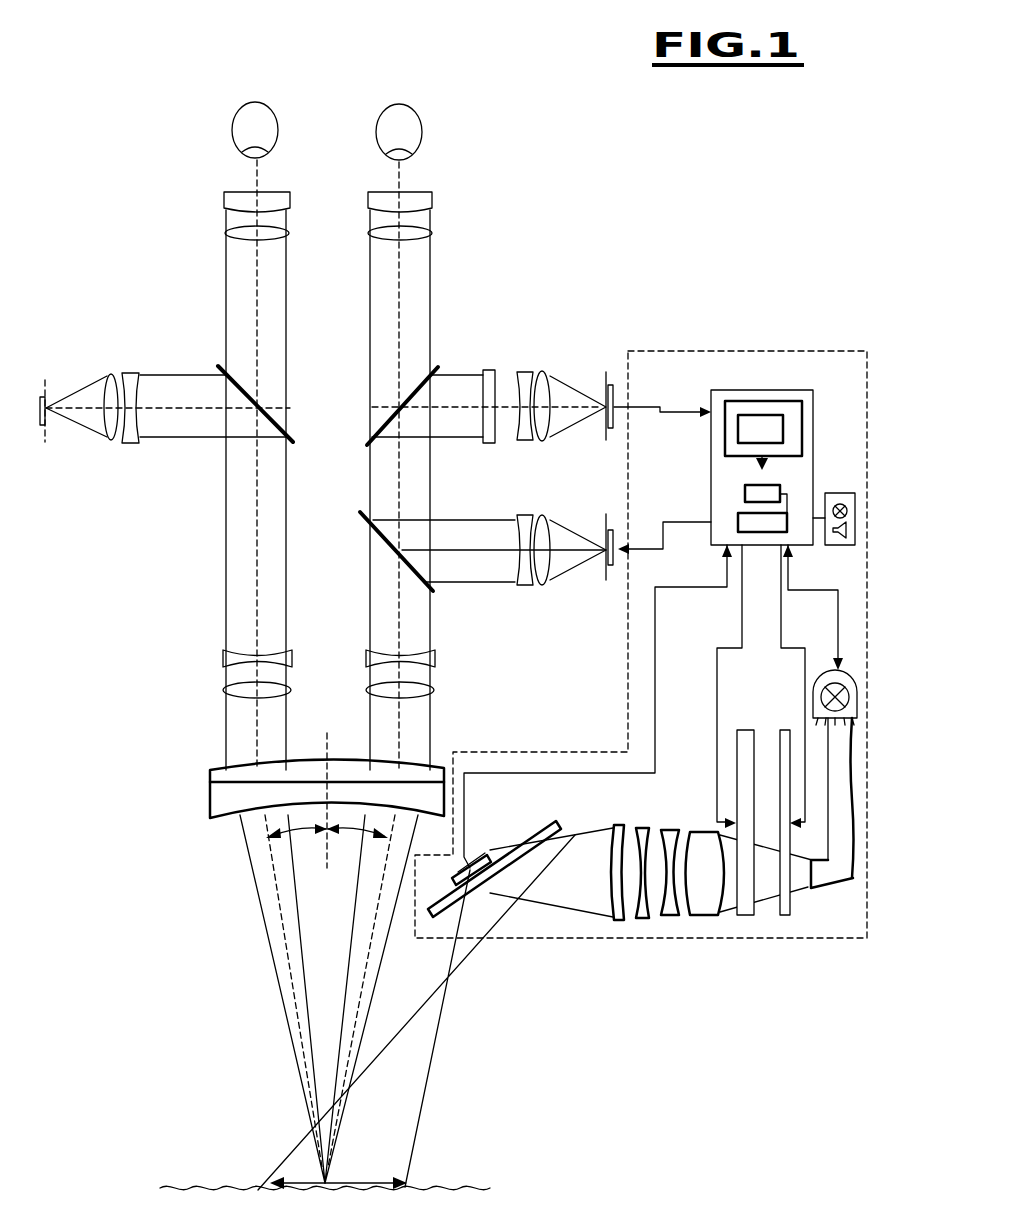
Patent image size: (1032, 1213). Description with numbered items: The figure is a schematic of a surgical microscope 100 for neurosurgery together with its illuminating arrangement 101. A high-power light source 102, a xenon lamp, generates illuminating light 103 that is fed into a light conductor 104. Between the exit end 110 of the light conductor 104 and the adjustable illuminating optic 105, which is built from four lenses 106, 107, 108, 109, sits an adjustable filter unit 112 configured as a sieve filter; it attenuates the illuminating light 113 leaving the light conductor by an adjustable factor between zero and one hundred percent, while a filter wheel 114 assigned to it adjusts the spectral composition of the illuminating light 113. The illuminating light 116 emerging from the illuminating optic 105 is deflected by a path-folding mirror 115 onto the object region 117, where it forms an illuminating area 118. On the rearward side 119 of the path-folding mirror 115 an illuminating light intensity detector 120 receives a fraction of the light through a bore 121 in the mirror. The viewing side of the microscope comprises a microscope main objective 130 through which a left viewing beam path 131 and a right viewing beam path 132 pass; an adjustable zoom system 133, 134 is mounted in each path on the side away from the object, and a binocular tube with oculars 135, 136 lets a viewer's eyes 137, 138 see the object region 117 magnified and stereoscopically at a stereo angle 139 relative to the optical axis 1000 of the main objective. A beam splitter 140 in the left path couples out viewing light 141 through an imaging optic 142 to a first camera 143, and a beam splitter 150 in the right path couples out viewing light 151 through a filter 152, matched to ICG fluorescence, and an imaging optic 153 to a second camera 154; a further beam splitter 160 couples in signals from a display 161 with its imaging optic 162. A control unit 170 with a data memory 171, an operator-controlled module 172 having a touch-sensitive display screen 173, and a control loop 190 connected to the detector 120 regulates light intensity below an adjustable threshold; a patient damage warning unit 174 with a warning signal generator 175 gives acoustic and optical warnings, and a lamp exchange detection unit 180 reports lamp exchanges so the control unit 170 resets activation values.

The surgical microscope 100 is at (140, 258).
The illuminating arrangement 101 is at (655, 363).
The high-power light source 102 is at (858, 690).
The illuminating light 103 is at (855, 722).
The light conductor 104 is at (840, 868).
The adjustable illuminating optic 105 is at (712, 824).
The lens 106 is at (612, 925).
The lens 107 is at (636, 925).
The lens 108 is at (668, 910).
The lens 109 is at (702, 900).
The exit end of the light conductor 110 is at (827, 887).
The adjustable filter unit 112 is at (784, 917).
The illuminating light 113 is at (798, 880).
The filter wheel 114 is at (753, 917).
The path-folding mirror 115 is at (523, 848).
The illuminating light 116 is at (552, 893).
The object region 117 is at (193, 1185).
The illuminating area 118 is at (370, 1180).
The rearward side of the path-folding mirror 119 is at (552, 826).
The illuminating light intensity detector 120 is at (453, 878).
The bore 121 is at (488, 882).
The microscope main objective 130 is at (225, 800).
The left viewing beam path 131 is at (263, 620).
The right viewing beam path 132 is at (400, 586).
The adjustable zoom system 133 is at (212, 643).
The adjustable zoom system 134 is at (448, 643).
The ocular 135 is at (215, 186).
The ocular 136 is at (437, 186).
The eye 137 is at (245, 118).
The eye 138 is at (412, 130).
The stereo angle 139 is at (350, 840).
The beam splitter 140 is at (218, 368).
The viewing light 141 is at (207, 407).
The imaging optic 142 is at (147, 452).
The first camera 143 is at (40, 397).
The beam splitter 150 is at (412, 377).
The viewing light 151 is at (455, 377).
The filter 152 is at (488, 373).
The imaging optic 153 is at (552, 448).
The second camera 154 is at (609, 380).
The beam splitter 160 is at (358, 514).
The display 161 is at (613, 560).
The imaging optic 162 is at (552, 590).
The control unit 170 is at (735, 503).
The data memory 171 is at (750, 484).
The operator-controlled module 172 is at (733, 401).
The touch-sensitive display screen 173 is at (757, 425).
The patient damage warning unit 174 is at (843, 493).
The warning signal generator 175 is at (853, 523).
The lamp exchange detection unit 180 is at (813, 703).
The control loop 190 is at (767, 527).
The optical axis 1000 is at (327, 750).